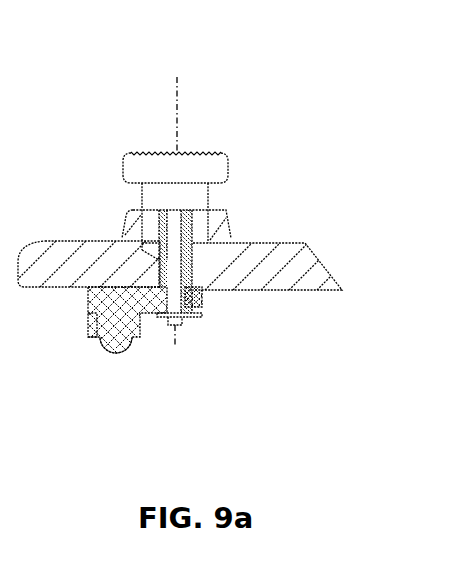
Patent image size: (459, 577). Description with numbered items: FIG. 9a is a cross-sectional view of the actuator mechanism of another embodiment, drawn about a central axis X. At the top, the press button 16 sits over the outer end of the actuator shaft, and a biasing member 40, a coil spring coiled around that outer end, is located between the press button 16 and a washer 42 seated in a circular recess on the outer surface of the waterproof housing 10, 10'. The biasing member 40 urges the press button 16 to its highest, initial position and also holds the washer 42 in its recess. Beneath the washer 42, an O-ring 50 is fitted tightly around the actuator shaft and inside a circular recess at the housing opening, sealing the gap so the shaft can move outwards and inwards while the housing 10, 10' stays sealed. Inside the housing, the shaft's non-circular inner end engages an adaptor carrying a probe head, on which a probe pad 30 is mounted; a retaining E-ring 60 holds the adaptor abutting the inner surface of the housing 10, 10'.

The axis X is at (180, 93).
The press button 16 is at (217, 157).
The biasing member 40 is at (192, 225).
The second workpiece plate 10, 10' is at (292, 235).
The washer 42 is at (205, 253).
The O-ring 50 is at (191, 260).
The E-ring 60 is at (187, 315).
The probe pad 30 is at (126, 348).